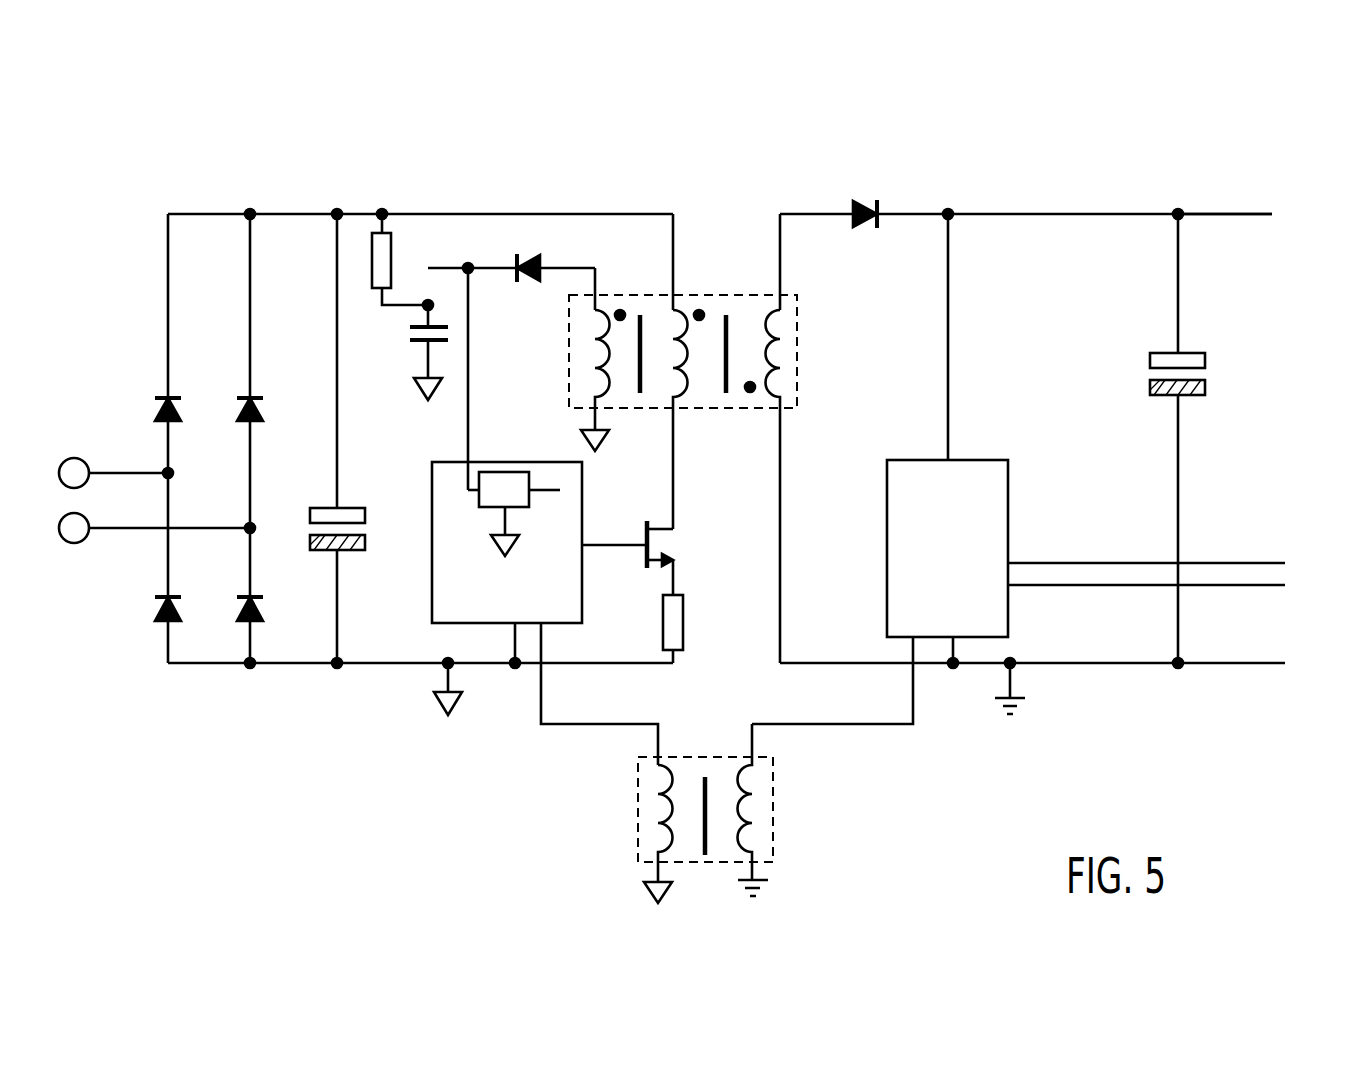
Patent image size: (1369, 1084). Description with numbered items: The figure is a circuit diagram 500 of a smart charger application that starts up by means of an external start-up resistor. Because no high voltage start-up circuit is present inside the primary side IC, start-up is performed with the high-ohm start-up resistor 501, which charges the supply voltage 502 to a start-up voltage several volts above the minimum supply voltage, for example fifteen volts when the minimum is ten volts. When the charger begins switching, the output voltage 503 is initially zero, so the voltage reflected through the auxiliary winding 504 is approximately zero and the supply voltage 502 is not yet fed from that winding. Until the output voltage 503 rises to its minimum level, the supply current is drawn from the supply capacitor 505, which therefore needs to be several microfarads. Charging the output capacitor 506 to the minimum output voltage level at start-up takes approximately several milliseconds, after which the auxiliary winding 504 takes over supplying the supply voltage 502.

The circuit diagram 500 is at (1313, 164).
The start-up resistor R2 501 is at (371, 250).
The Vcc 502 is at (505, 275).
The Vout 503 is at (1255, 216).
The auxiliary winding 504 is at (580, 360).
The Vcc capacitor CVcc 505 is at (410, 343).
The output capacitor C2 506 is at (1160, 352).